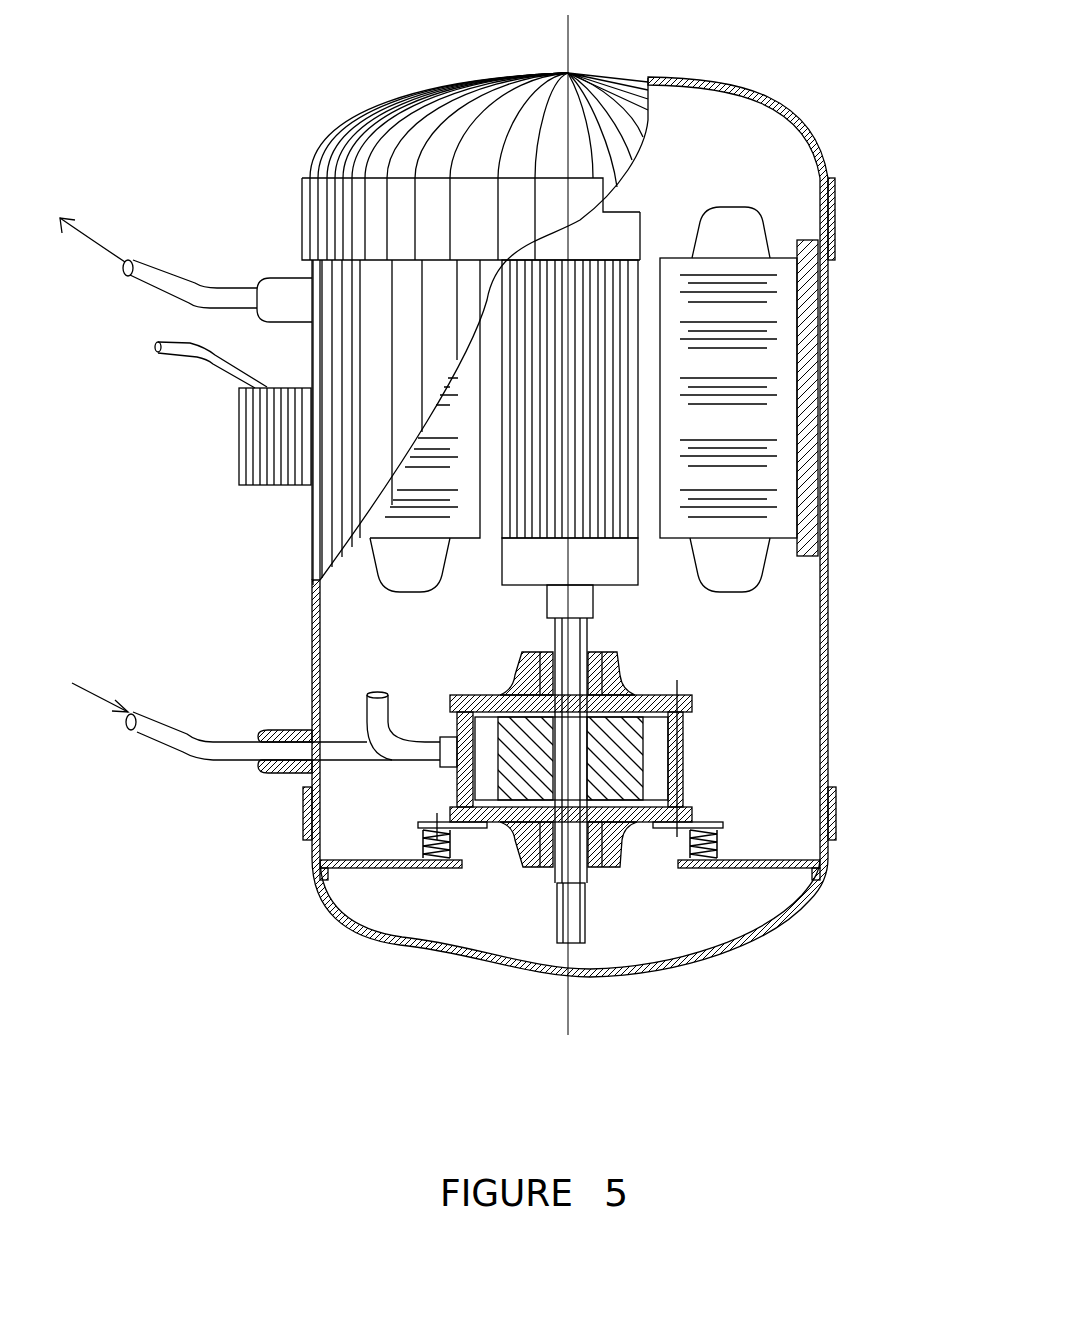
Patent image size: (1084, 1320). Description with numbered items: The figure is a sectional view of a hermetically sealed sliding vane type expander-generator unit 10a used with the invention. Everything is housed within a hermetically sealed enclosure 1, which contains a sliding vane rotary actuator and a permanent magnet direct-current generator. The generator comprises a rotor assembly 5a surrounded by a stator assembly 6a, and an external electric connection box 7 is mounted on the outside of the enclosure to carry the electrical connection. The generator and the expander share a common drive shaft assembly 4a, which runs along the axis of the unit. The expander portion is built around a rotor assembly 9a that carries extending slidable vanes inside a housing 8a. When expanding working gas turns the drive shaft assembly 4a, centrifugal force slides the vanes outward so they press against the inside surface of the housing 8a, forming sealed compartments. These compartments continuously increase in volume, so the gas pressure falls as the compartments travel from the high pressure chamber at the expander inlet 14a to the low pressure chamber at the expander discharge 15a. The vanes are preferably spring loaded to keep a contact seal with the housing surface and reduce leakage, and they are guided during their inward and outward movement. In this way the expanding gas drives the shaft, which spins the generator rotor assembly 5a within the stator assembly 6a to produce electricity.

The hermetically sealed enclosure 1 is at (305, 847).
The drive shaft assembly 4a is at (572, 703).
The rotor assembly 5a is at (613, 293).
The stator assembly 6a is at (790, 277).
The external electric connection box 7 is at (172, 357).
The housing 8a is at (688, 697).
The rotor assembly 9a is at (625, 778).
The expander-generator unit 10a is at (228, 990).
The expander inlet 14a is at (246, 737).
The expander discharge 15a is at (248, 287).